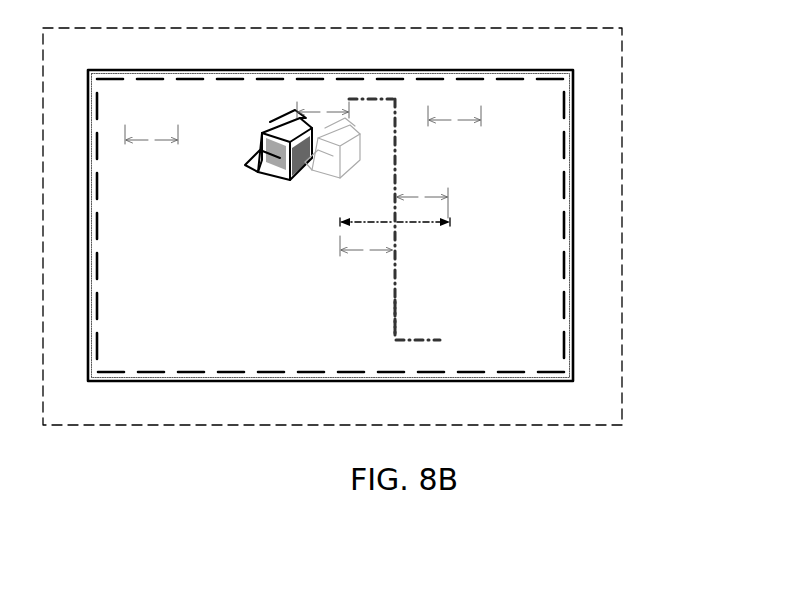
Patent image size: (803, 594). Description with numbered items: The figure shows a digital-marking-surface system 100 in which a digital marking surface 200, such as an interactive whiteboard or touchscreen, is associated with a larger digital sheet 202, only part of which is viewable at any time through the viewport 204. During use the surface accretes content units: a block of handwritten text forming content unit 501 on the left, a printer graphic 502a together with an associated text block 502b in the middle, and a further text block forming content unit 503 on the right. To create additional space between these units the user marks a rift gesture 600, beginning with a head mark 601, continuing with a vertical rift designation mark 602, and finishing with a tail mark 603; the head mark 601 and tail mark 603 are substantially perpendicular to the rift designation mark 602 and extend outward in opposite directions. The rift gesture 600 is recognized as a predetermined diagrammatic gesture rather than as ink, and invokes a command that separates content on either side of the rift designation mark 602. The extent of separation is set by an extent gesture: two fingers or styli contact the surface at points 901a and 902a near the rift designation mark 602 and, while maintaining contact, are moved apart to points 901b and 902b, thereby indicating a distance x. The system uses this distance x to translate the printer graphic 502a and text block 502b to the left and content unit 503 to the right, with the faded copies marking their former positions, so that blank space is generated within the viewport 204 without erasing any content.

The digital-marking-surface system 100 is at (578, 95).
The digital marking surface 200 is at (543, 355).
The digital sheet 202 is at (625, 47).
The viewport 204 is at (568, 165).
The content unit 501 is at (125, 124).
The content unit constituent 502a is at (257, 172).
The content unit constituent 502b is at (236, 319).
The content unit 503 is at (495, 128).
The rift gesture 600 is at (399, 99).
The head mark 601 is at (352, 98).
The rift designation mark 602 is at (399, 313).
The tail mark 603 is at (430, 344).
The right shift arrow 901a is at (400, 229).
The right shift distance x 901b is at (451, 215).
The left shift arrow 902a is at (391, 217).
The left shift distance x 902b is at (340, 229).